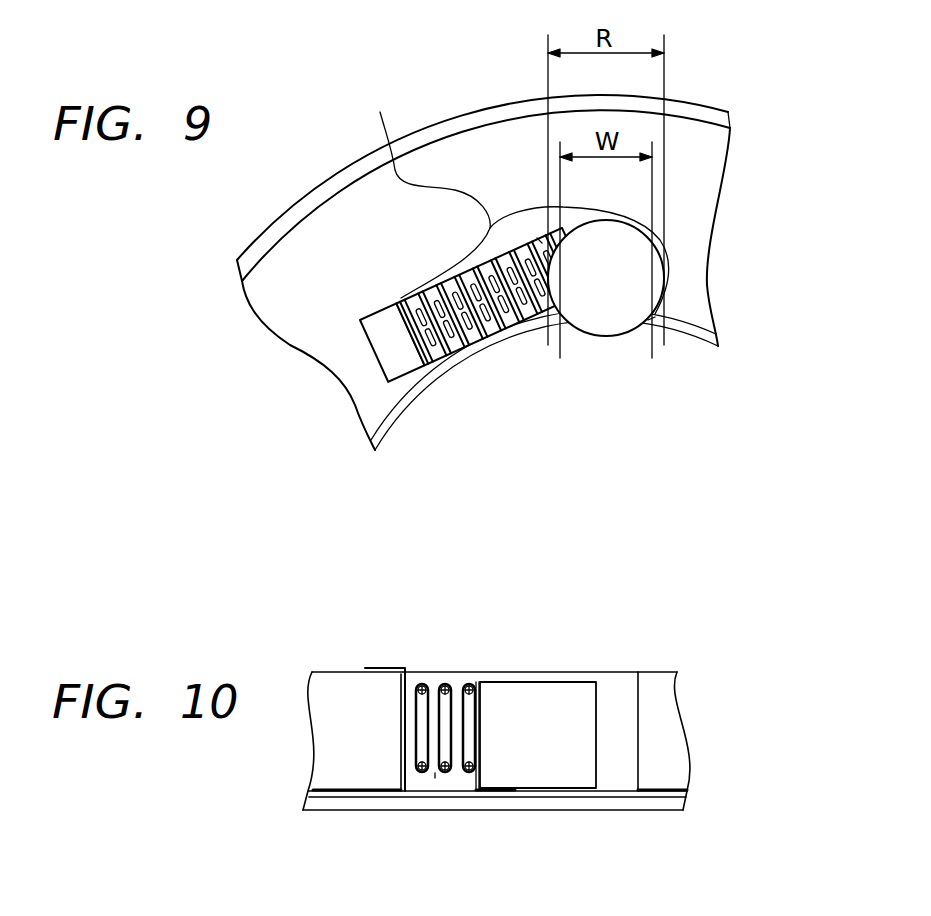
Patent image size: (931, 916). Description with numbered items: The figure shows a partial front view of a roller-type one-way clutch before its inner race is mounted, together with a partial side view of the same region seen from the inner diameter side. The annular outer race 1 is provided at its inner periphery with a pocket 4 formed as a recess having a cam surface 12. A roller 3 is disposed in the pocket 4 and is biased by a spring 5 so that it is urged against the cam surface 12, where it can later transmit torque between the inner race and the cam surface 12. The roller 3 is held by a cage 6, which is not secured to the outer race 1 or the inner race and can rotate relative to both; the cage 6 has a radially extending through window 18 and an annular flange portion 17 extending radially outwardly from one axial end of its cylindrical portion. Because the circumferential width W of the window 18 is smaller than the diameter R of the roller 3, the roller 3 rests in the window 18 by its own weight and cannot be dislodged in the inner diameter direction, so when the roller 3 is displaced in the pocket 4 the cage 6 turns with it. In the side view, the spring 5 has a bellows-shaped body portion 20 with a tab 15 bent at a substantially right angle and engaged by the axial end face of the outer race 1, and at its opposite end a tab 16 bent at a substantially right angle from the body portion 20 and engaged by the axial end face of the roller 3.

In FIG. 9, the outer race 1 is at (267, 297).
In FIG. 10, the outer race 1 is at (330, 690).
In FIG. 9, the roller 3 is at (595, 327).
In FIG. 10, the roller 3 is at (547, 693).
In FIG. 9, the pocket 4 is at (518, 200).
In FIG. 9, the spring 5 is at (500, 334).
In FIG. 10, the spring 5 is at (450, 680).
In FIG. 9, the cage 6 is at (415, 399).
In FIG. 10, the cage 6 is at (622, 688).
In FIG. 9, the cam surface 12 is at (630, 218).
In FIG. 9, the tab 15 is at (383, 322).
In FIG. 10, the tab 15 is at (385, 664).
In FIG. 9, the tab 16 is at (537, 238).
In FIG. 10, the tab 16 is at (503, 791).
In FIG. 10, the flange portion 17 is at (628, 800).
In FIG. 9, the window 18 is at (648, 320).
In FIG. 10, the body portion 20 is at (435, 778).